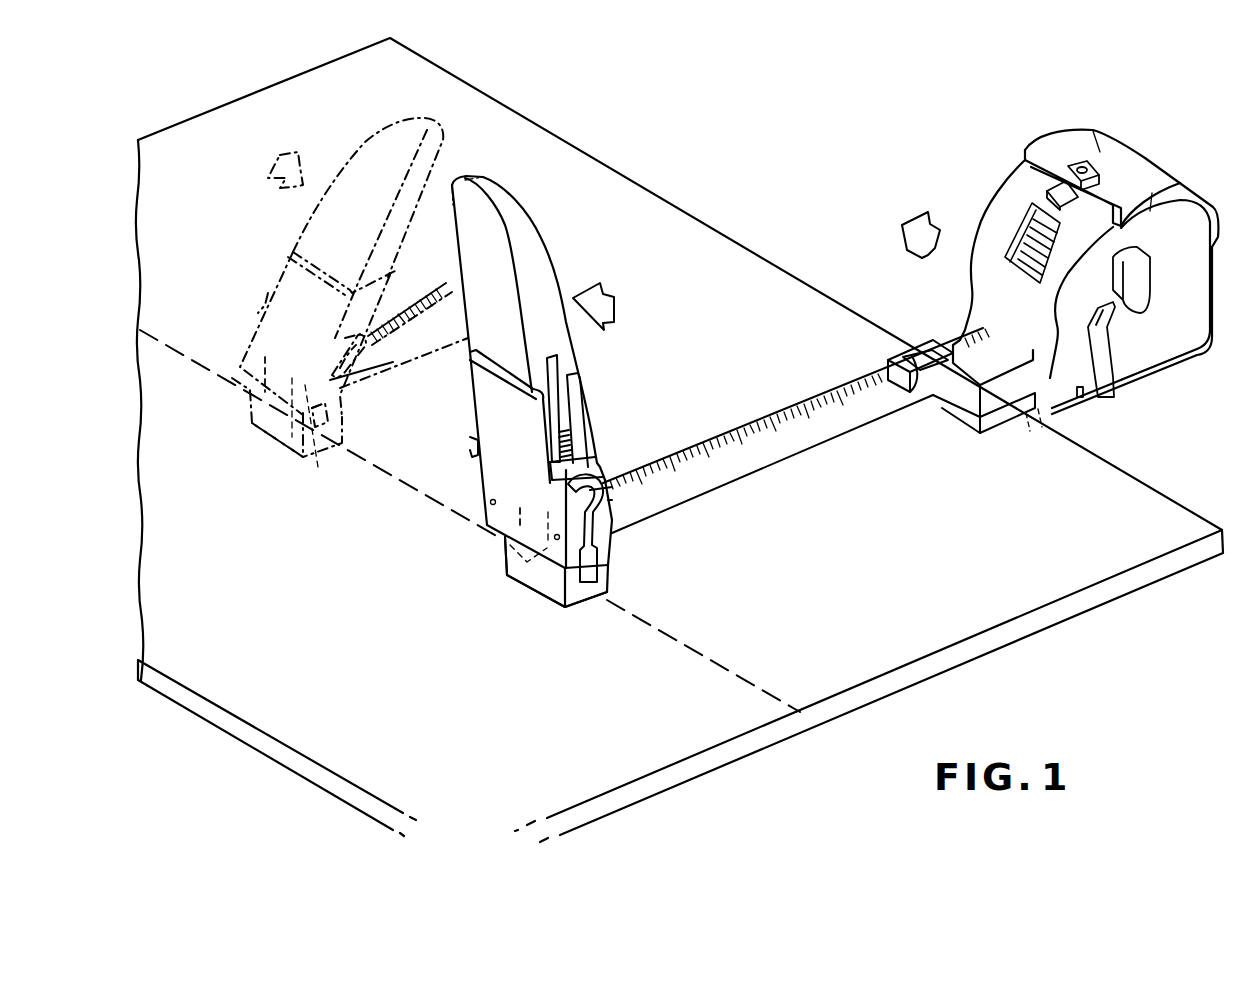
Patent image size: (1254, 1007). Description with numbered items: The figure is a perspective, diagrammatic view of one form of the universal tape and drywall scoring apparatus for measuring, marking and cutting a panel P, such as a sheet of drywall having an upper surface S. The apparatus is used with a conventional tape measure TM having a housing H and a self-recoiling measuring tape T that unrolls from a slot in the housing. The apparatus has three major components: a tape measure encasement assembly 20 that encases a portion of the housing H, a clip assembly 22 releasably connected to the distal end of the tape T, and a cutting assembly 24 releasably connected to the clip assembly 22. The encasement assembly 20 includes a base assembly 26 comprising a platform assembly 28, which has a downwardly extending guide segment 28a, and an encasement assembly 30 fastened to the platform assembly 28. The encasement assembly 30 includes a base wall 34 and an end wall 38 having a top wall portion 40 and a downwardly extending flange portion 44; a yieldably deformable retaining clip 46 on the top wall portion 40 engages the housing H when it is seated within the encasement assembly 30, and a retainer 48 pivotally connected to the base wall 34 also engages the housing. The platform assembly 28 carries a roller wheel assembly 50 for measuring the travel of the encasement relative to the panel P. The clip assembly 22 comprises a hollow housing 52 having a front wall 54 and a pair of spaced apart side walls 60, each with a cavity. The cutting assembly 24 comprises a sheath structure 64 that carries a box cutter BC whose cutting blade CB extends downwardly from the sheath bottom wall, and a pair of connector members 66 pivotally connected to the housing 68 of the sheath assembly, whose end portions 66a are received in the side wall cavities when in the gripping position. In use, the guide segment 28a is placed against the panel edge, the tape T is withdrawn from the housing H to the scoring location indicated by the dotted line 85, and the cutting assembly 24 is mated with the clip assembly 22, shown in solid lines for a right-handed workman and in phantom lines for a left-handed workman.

The tape measure encasement assembly 20 is at (964, 286).
The clip assembly 22 is at (518, 586).
The cutting assembly 24 is at (549, 420).
The base assembly 26 is at (968, 432).
The platform assembly 28 is at (973, 440).
The guide segment 28a is at (1038, 442).
The encasement assembly 30 is at (1058, 142).
The base wall 34 is at (1153, 372).
The end wall 38 is at (1217, 237).
The top wall portion 40 is at (1100, 152).
The flange portion 44 is at (1150, 197).
The retaining clip 46 is at (1050, 186).
The retainer 48 is at (1101, 345).
The roller wheel assembly 50 is at (903, 360).
The hollow housing 52 is at (502, 579).
The front wall 54 is at (548, 590).
The side walls 60 is at (580, 598).
The sheath structure 64 is at (476, 423).
The connector members 66 is at (603, 482).
The end portion 66a is at (600, 568).
The housing 68 is at (612, 541).
The dotted line 85 is at (740, 684).
The box cutter BC is at (494, 188).
The cutting blade CB is at (502, 540).
The housing H is at (980, 289).
The panel P is at (583, 150).
The upper surface S is at (881, 578).
The measuring tape T is at (745, 466).
The tape measure TM is at (806, 379).